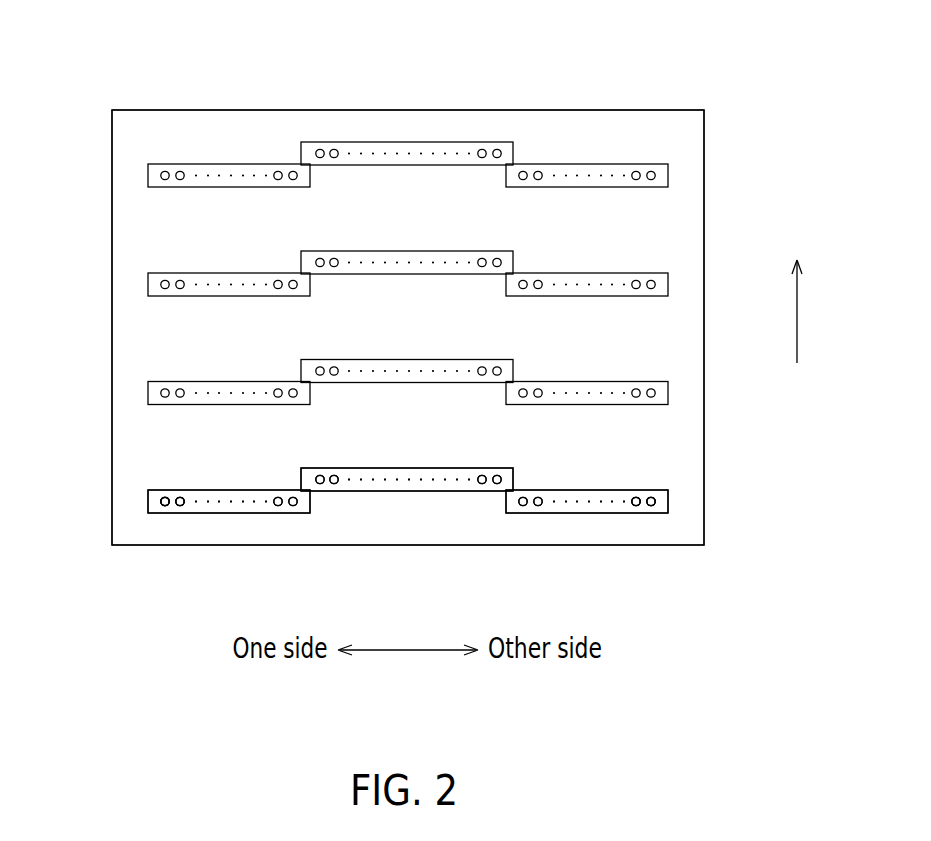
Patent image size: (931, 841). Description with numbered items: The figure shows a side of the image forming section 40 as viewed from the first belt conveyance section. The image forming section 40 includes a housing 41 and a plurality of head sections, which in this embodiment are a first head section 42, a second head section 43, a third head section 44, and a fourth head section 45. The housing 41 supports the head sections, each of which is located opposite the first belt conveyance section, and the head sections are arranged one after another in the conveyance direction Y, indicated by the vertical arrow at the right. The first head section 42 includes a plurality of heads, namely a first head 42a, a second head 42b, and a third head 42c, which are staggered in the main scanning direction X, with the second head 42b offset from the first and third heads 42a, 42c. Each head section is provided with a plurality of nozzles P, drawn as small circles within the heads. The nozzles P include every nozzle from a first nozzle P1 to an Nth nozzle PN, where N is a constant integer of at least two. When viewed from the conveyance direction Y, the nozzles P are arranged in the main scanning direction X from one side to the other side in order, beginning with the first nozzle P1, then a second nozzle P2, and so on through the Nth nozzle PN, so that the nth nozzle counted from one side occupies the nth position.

The image forming section 40 is at (678, 82).
The housing 41 is at (591, 121).
The first head section 42 is at (681, 481).
The second head section 43 is at (681, 372).
The third head section 44 is at (681, 262).
The fourth head section 45 is at (681, 153).
The first head 42a is at (200, 490).
The second head 42b is at (373, 468).
The third head 42c is at (578, 490).
The nozzles P is at (140, 500).
The first nozzle P1 is at (165, 507).
The second nozzle P2 is at (180, 507).
The Nth nozzle PN is at (651, 507).
The main scanning direction X is at (408, 668).
The conveyance direction Y is at (805, 311).